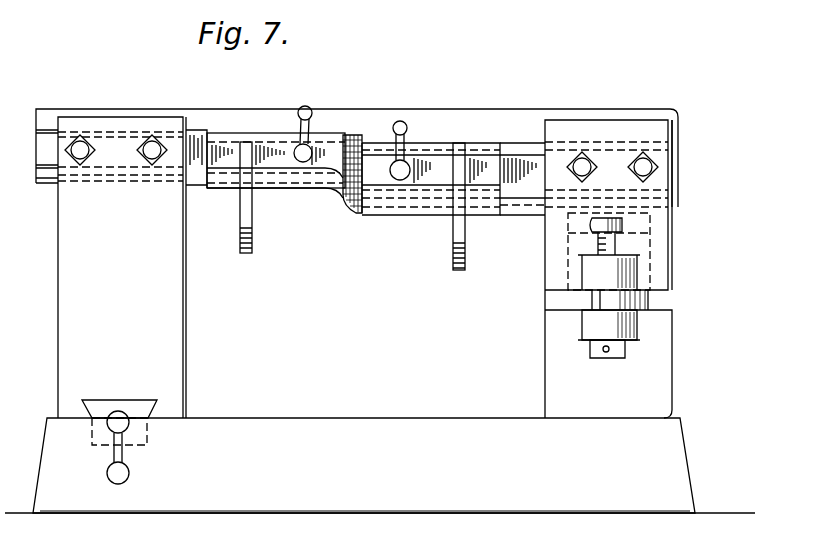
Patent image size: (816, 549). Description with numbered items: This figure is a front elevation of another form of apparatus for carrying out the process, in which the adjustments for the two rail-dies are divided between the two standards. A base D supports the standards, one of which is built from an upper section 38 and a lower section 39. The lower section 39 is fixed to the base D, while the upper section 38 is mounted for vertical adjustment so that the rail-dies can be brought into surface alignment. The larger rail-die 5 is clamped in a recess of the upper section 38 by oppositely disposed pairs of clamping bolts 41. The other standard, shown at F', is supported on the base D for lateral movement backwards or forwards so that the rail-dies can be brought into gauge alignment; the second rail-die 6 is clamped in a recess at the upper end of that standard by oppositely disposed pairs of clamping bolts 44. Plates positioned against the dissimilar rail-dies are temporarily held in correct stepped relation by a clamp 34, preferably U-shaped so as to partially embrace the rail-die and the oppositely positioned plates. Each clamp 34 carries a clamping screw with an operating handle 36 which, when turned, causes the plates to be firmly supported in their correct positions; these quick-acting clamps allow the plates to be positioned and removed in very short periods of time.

The rail-die 5 is at (417, 120).
The rail-die 6 is at (275, 120).
The clamp 34 is at (253, 222).
The operating handle 36 is at (308, 104).
The upper section 38 is at (660, 252).
The lower section 39 is at (656, 372).
The clamping bolts 41 is at (582, 160).
The clamping bolts 44 is at (150, 149).
The base D is at (383, 427).
The frame arms F' is at (322, 378).